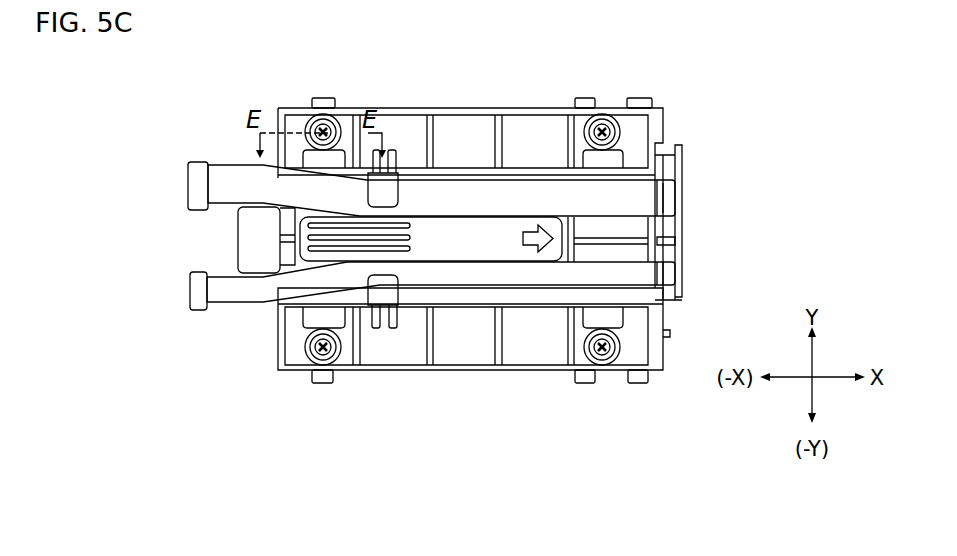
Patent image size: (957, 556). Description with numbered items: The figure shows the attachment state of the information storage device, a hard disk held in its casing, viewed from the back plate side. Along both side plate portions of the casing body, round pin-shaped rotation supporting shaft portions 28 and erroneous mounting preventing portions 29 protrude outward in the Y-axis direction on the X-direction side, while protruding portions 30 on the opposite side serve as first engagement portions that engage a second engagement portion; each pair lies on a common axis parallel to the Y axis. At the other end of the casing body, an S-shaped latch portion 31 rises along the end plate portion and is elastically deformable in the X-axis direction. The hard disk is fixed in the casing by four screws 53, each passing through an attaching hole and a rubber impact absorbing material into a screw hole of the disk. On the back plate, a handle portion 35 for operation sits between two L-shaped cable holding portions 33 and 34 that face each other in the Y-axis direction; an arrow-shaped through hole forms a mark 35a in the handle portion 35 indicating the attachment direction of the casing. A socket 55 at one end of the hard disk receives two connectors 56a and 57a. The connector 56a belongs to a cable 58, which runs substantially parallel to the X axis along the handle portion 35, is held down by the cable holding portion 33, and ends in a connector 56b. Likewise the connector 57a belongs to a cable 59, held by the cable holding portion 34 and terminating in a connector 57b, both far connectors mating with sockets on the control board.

The rotation supporting shaft portion 28 is at (657, 102).
The erroneous mounting preventing portion 29 is at (585, 100).
The protruding portion 30 is at (322, 98).
The latch portion 31 is at (252, 248).
The cable holding portion 33 is at (388, 328).
The cable holding portion 34 is at (383, 190).
The handle portion 35 is at (452, 247).
The mark 35a is at (530, 252).
The screw 53 is at (307, 118).
The socket 55 is at (685, 243).
The connector 56a is at (673, 257).
The connector 56b is at (192, 305).
The connector 57a is at (670, 227).
The connector 57b is at (190, 170).
The cable 58 is at (252, 298).
The cable 59 is at (658, 200).